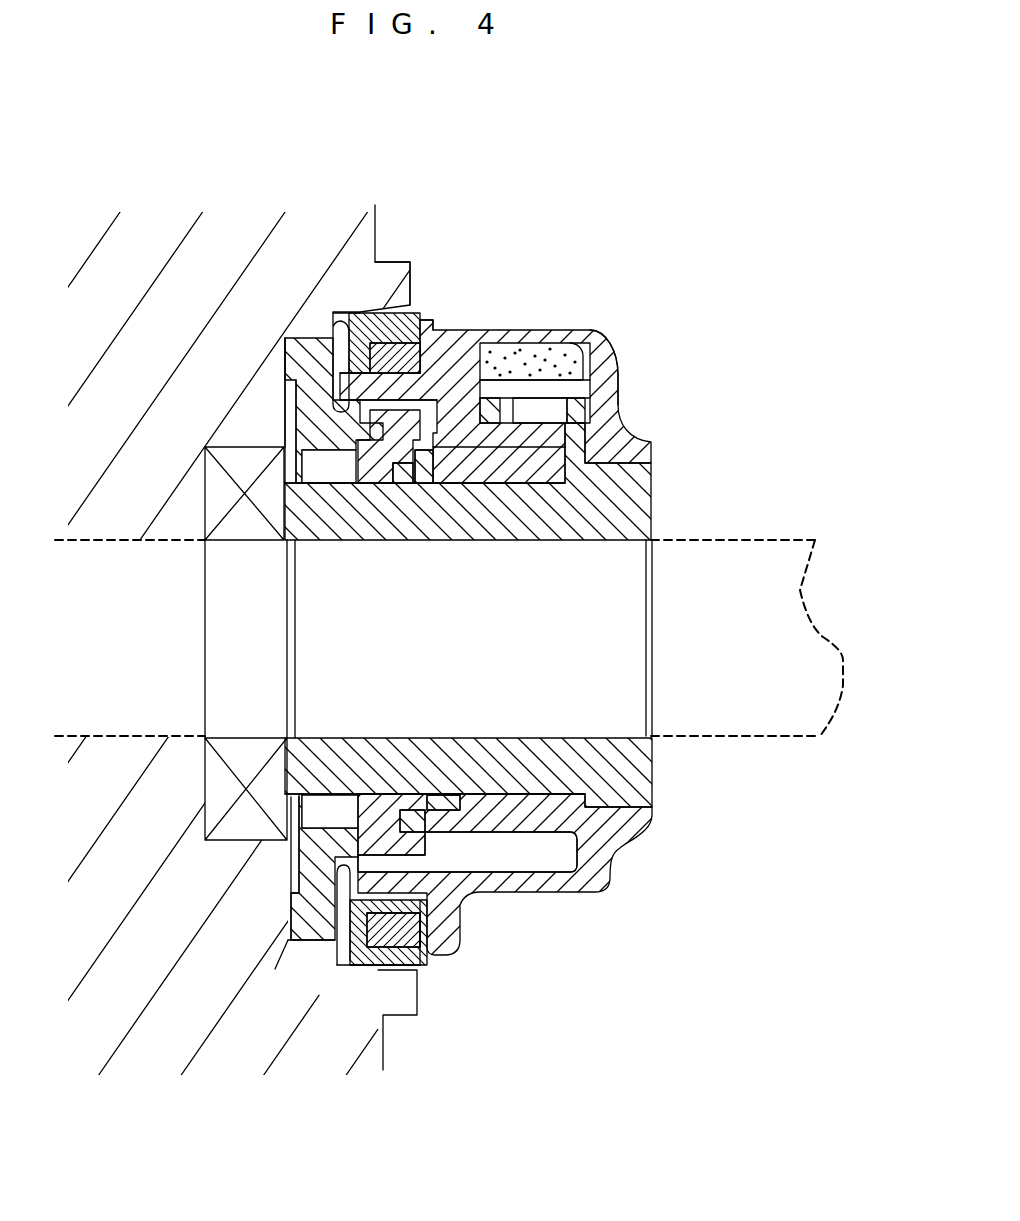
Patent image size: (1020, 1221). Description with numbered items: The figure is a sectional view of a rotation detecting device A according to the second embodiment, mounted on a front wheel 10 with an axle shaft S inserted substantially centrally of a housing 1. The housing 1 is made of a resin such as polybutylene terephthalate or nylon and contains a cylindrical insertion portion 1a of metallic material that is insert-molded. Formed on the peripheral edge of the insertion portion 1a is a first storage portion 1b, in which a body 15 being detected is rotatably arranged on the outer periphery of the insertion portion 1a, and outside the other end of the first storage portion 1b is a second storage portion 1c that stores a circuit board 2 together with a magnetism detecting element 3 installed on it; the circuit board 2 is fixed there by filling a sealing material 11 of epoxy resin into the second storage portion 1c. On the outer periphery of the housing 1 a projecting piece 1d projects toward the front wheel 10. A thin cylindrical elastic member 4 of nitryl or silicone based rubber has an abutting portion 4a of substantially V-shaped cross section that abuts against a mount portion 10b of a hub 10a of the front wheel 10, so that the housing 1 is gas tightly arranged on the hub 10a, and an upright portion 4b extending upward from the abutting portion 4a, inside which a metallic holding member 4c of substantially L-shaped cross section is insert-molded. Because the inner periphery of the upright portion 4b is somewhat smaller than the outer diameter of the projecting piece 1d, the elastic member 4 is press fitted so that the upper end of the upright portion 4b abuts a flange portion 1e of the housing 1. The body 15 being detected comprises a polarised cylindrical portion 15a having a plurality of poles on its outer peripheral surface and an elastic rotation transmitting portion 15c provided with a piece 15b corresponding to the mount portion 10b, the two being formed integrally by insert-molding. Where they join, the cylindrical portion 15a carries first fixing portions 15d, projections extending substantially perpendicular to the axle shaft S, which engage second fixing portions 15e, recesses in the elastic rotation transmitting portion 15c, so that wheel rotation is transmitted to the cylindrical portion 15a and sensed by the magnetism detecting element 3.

The housing 1 is at (637, 433).
The insertion portion 1a is at (647, 473).
The first storage portion 1b is at (517, 860).
The second storage portion 1c is at (578, 349).
The projecting piece 1d is at (368, 382).
The flange portion 1e is at (432, 322).
The circuit board 2 is at (573, 390).
The magnetism detecting element 3 is at (540, 413).
The elastic member 4 is at (393, 338).
The abutting portion 4a is at (378, 972).
The upright portion 4b is at (440, 920).
The holding member 4c is at (413, 915).
The front wheel 10 is at (236, 181).
The hub 10a is at (403, 273).
The mount portion 10b is at (285, 380).
The sealing material 11 is at (547, 353).
The body being detected 15 is at (421, 411).
The cylindrical portion 15a is at (500, 482).
The piece 15b is at (275, 969).
The elastic rotation transmitting portion 15c is at (325, 837).
The first fixing portions 15d is at (420, 480).
The second fixing portions 15e is at (397, 470).
The rotation detecting device A is at (729, 404).
The axle shaft S is at (790, 592).